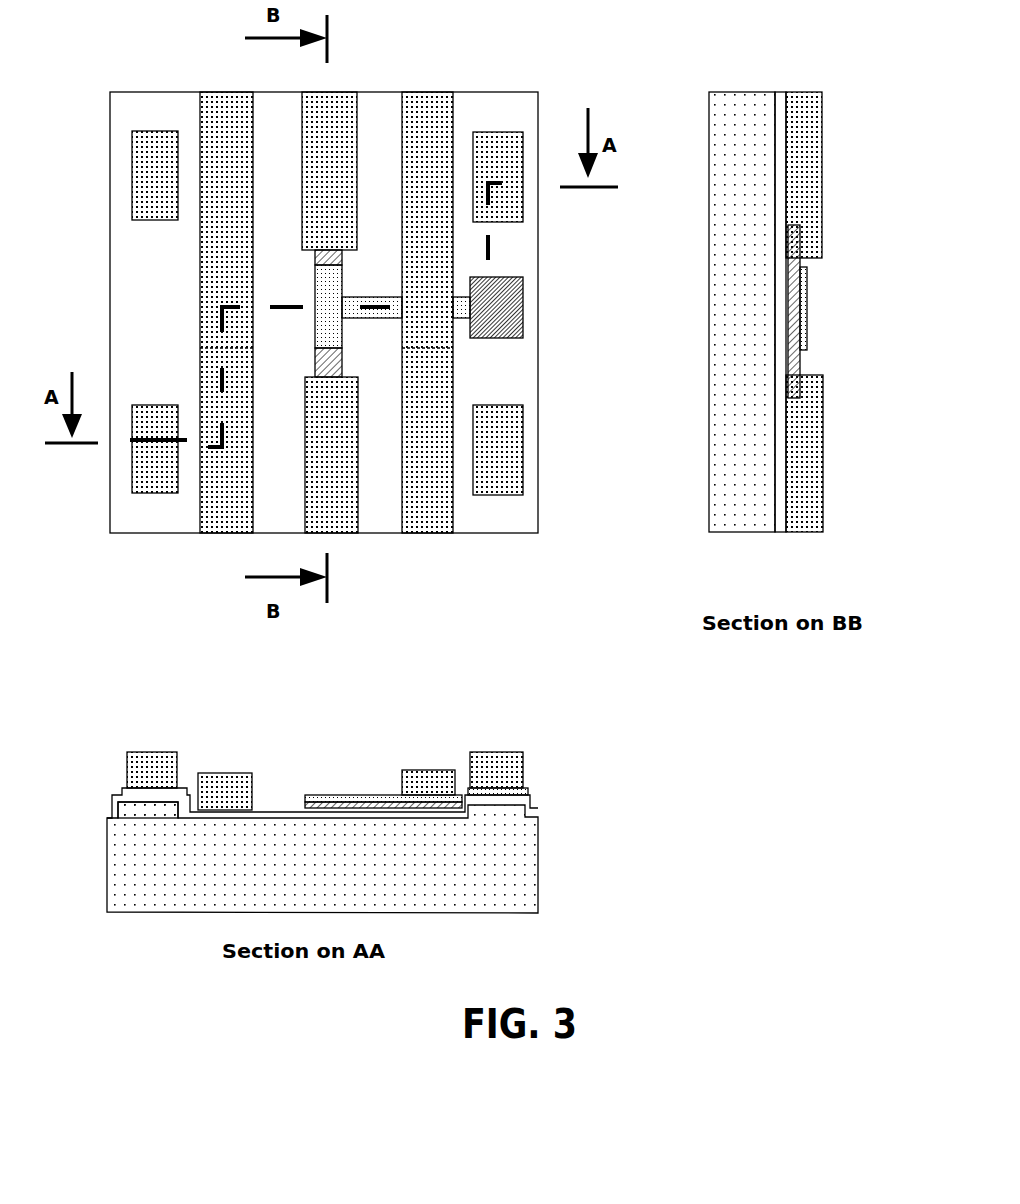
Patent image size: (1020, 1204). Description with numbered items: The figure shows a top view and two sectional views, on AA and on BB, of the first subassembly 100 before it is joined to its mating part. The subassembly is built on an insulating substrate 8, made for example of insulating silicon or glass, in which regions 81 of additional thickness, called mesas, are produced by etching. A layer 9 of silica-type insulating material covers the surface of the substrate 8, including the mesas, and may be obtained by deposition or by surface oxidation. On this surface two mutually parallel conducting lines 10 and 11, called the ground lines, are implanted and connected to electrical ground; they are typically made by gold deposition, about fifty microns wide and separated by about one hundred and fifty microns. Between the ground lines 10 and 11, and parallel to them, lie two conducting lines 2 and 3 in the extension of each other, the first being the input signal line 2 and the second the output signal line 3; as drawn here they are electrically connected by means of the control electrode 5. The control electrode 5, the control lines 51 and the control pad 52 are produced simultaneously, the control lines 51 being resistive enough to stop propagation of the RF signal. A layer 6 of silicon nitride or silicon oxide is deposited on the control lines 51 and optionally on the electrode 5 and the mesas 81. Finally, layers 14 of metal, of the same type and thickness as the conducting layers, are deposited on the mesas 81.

The input signal line 2 is at (330, 500).
The output signal line 3 is at (322, 150).
The control electrode 5 is at (803, 370).
The layer of insulating material 6 is at (810, 307).
The insulating substrate 8 is at (757, 178).
The layer of insulating material 9 is at (785, 507).
The ground line 10 is at (443, 495).
The ground line 11 is at (228, 500).
The layers of metal 14 is at (505, 443).
The control lines 51 is at (373, 312).
The control pad 52 is at (523, 333).
The mesas 81 is at (152, 813).
The first subassembly 100 is at (692, 783).